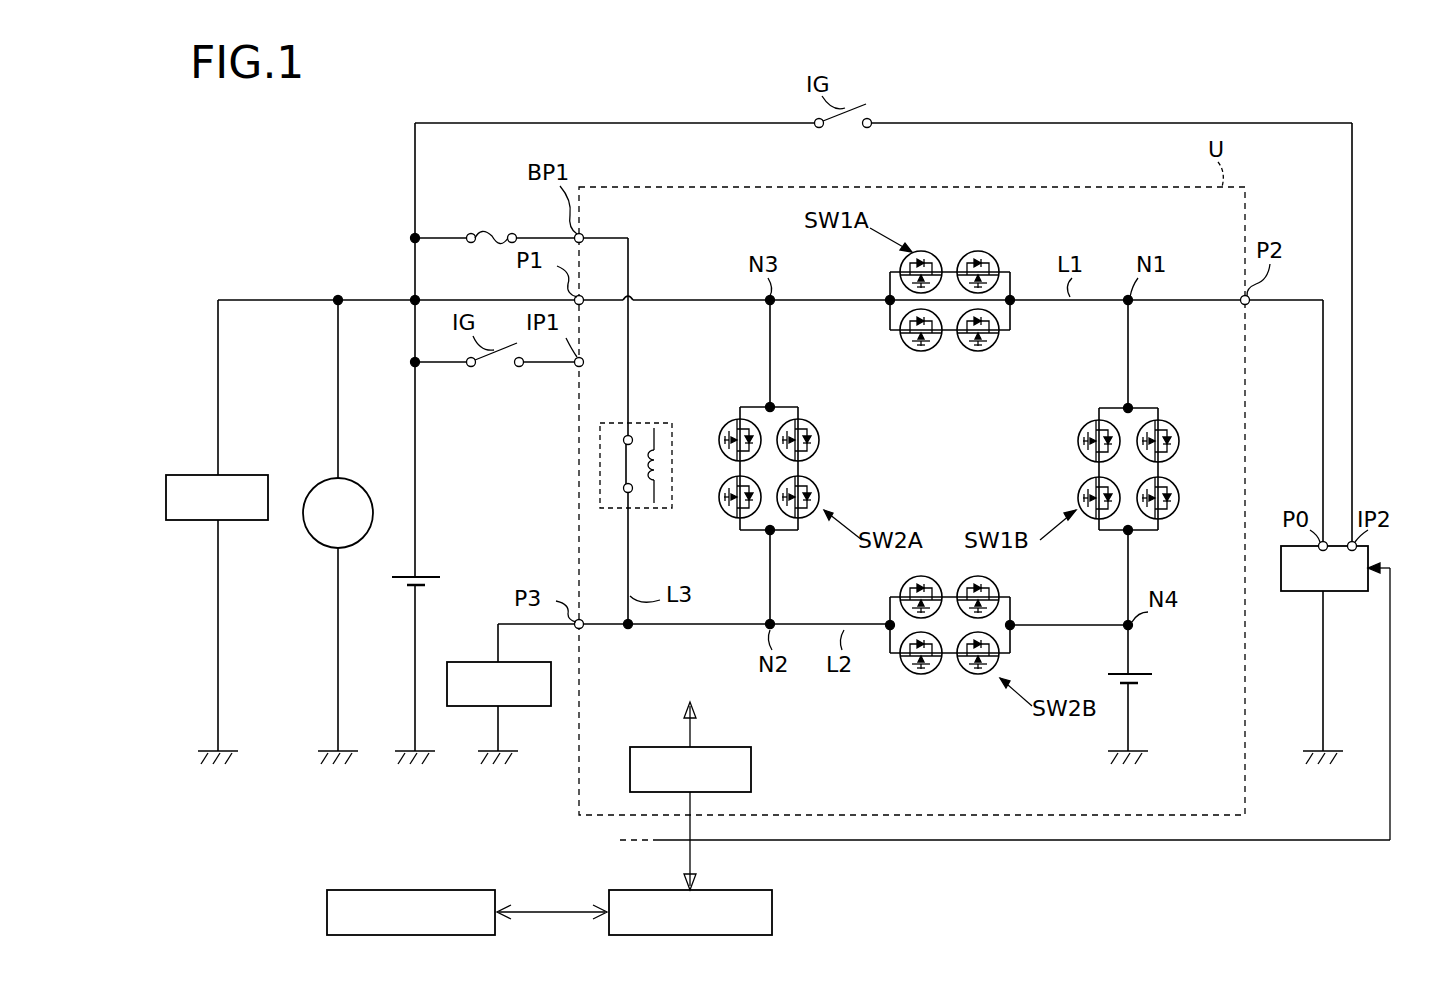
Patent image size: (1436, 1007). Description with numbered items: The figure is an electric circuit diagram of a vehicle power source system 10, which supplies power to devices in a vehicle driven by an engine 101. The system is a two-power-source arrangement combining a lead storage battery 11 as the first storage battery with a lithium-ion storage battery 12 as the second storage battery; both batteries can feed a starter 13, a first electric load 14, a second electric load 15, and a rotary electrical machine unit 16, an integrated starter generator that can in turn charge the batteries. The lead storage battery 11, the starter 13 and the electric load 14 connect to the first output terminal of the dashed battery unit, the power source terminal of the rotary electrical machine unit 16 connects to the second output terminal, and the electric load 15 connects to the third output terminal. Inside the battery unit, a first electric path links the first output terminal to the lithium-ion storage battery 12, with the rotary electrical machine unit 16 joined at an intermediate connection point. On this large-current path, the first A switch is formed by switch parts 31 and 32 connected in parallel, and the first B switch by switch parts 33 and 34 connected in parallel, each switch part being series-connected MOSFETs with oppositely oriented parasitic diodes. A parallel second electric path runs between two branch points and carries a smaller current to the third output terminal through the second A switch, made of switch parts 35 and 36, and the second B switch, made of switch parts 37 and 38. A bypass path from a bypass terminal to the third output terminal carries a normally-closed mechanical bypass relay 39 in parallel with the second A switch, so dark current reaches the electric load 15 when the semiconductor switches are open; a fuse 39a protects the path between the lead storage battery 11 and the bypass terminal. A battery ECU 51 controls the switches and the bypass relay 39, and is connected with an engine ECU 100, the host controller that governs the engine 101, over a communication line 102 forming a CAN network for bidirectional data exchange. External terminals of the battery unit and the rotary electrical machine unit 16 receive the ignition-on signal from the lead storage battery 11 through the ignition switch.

The power source system 10 is at (1268, 108).
The lead storage battery 11 is at (446, 558).
The lithium-ion storage battery 12 is at (1140, 672).
The starter 13 is at (364, 482).
The electric load 14 is at (244, 474).
The electric load 15 is at (476, 660).
The rotary electrical machine unit 16 is at (1300, 592).
The switch part 31 is at (992, 256).
The switch part 32 is at (988, 351).
The switch part 33 is at (1176, 428).
The switch part 34 is at (1080, 428).
The switch part 35 is at (818, 426).
The switch part 36 is at (720, 426).
The switch part 37 is at (900, 578).
The switch part 38 is at (936, 676).
The bypass relay 39 is at (658, 508).
The fuse 39a is at (483, 232).
The battery ECU 51 is at (630, 772).
The engine ECU 100 is at (773, 916).
The engine 101 is at (327, 916).
The communication line 102 is at (1072, 842).